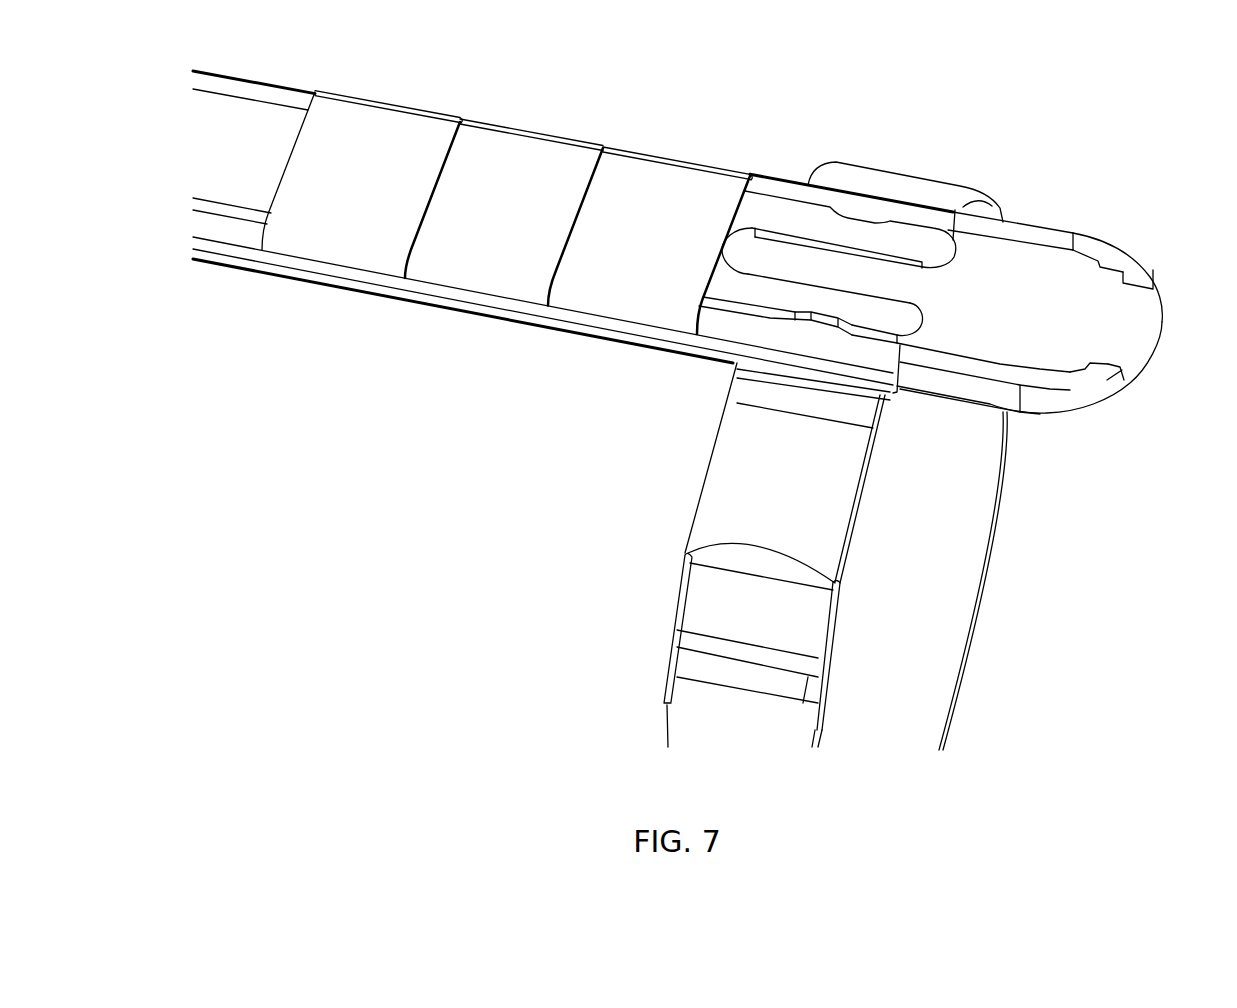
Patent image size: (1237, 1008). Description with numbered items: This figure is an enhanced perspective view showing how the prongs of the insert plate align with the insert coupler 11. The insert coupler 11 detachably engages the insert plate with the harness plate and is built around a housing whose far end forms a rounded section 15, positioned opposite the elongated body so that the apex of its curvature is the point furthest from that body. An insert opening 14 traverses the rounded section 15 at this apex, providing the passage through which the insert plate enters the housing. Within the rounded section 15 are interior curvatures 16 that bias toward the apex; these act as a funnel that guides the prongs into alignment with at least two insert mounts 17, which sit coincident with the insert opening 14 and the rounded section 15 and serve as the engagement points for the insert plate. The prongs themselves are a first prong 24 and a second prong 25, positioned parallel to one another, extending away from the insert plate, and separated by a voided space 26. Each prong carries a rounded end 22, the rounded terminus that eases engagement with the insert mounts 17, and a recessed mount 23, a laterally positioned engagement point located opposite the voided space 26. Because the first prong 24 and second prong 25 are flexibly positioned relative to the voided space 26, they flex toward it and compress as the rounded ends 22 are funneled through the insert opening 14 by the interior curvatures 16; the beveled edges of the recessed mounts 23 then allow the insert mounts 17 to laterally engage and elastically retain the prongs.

The insert coupler 11 is at (1070, 207).
The insert opening 14 is at (1146, 340).
The rounded section 15 is at (1153, 371).
The interior curvature 16 is at (1100, 266).
The insert mount 17 is at (1150, 270).
The rounded end 22 is at (955, 259).
The recessed mount 23 is at (865, 222).
The first prong 24 is at (792, 207).
The second prong 25 is at (722, 353).
The voided space 26 is at (899, 282).